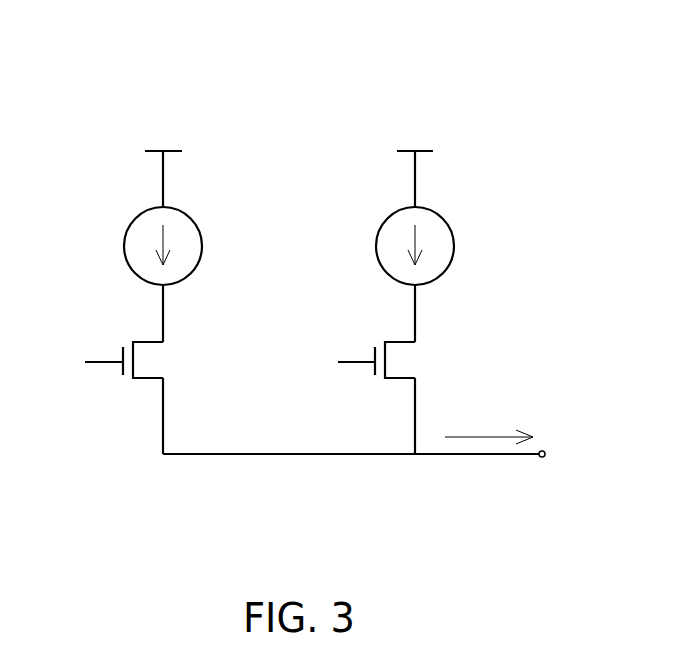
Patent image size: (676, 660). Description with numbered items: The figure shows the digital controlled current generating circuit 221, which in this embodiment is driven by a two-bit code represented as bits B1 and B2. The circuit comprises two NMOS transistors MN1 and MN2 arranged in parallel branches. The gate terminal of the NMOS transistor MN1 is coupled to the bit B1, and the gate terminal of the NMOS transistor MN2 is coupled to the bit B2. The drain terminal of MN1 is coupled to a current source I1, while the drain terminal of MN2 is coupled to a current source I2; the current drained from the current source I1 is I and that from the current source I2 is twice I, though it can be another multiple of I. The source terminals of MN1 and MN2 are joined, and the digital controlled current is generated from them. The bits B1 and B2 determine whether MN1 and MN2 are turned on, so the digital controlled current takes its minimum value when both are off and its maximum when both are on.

The digital controlled current generating circuit 221 is at (487, 100).
The current source I1 is at (177, 246).
The current source I2 is at (428, 246).
The NMOS transistor MN1 is at (167, 360).
The NMOS transistor MN2 is at (422, 360).
The bit B1 is at (89, 358).
The bit B2 is at (341, 358).